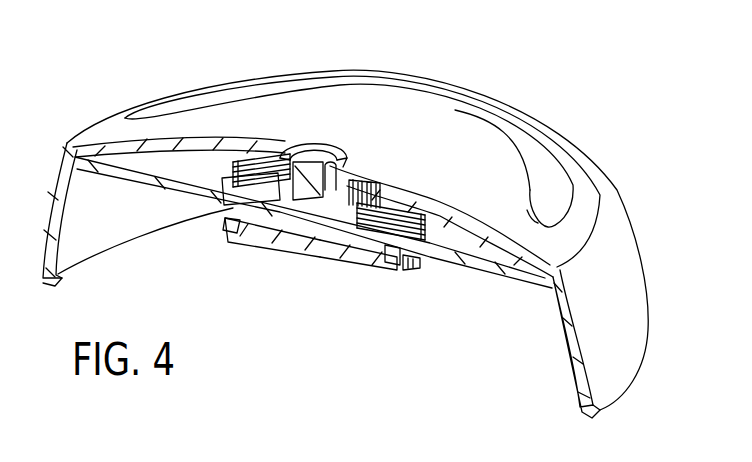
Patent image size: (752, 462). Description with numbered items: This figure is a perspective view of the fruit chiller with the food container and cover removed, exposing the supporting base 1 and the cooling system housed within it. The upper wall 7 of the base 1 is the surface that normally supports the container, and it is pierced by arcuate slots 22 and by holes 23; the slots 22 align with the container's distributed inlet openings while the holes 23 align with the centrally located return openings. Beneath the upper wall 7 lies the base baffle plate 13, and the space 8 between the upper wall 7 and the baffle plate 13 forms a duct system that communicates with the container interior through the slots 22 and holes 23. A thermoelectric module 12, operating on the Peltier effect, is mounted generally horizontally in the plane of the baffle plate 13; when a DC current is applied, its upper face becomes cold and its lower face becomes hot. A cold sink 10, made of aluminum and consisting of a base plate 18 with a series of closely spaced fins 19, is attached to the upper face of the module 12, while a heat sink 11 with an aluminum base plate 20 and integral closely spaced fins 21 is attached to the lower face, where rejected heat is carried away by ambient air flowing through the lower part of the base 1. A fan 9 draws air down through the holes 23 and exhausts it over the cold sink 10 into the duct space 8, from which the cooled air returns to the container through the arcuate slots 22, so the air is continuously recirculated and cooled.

The supporting base 1 is at (616, 240).
The upper wall 7 is at (390, 108).
The space 8 is at (172, 163).
The fan 9 is at (328, 177).
The cold sink 10 is at (235, 180).
The heat sink 11 is at (352, 252).
The thermoelectric module 12 is at (290, 223).
The base baffle plate 13 is at (508, 270).
The base plate 18 is at (445, 222).
The fins 19 is at (365, 193).
The base plate 20 is at (387, 250).
The fins 21 is at (403, 260).
The arcuate slots 22 is at (523, 124).
The holes 23 is at (300, 150).